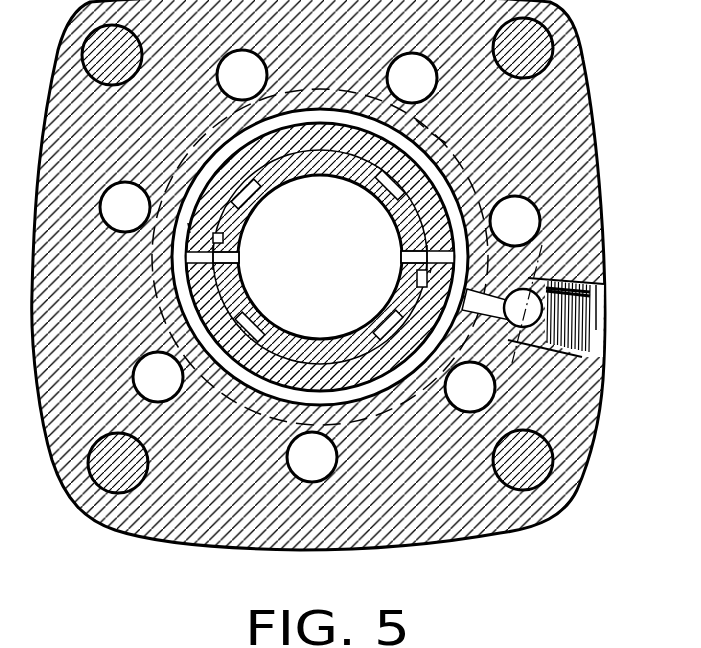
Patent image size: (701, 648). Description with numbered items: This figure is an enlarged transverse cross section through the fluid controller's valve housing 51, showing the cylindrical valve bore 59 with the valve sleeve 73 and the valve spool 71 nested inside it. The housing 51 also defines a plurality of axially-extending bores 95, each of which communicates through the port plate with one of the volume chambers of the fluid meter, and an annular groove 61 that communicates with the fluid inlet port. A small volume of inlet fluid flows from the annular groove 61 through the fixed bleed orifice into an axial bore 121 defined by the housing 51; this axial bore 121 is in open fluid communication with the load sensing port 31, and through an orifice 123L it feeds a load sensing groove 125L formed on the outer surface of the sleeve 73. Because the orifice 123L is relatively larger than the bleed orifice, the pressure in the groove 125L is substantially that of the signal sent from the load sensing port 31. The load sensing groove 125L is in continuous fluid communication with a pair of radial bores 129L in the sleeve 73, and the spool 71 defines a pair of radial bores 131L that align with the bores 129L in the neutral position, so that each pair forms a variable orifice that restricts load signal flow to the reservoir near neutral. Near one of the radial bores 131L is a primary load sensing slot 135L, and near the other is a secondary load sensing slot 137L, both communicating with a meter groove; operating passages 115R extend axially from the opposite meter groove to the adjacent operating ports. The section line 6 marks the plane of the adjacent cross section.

The valve housing 51 is at (582, 127).
The axially-extending bore 95 is at (403, 58).
The axial bore 121 is at (476, 361).
The annular groove 61 is at (353, 98).
The load sensing groove 125L is at (446, 143).
The cylindrical valve bore 59 is at (254, 393).
The valve sleeve 73 is at (239, 283).
The valve spool 71 is at (338, 172).
The radial bore 129L is at (187, 258).
The radial bore 131L is at (240, 258).
The operating passage 115R is at (258, 200).
The secondary load sensing slot 137L is at (190, 233).
The primary load sensing slot 135L is at (431, 268).
The orifice 123L is at (490, 293).
The load sensing port 31 is at (594, 340).
The section line 6- 6 is at (547, 259).